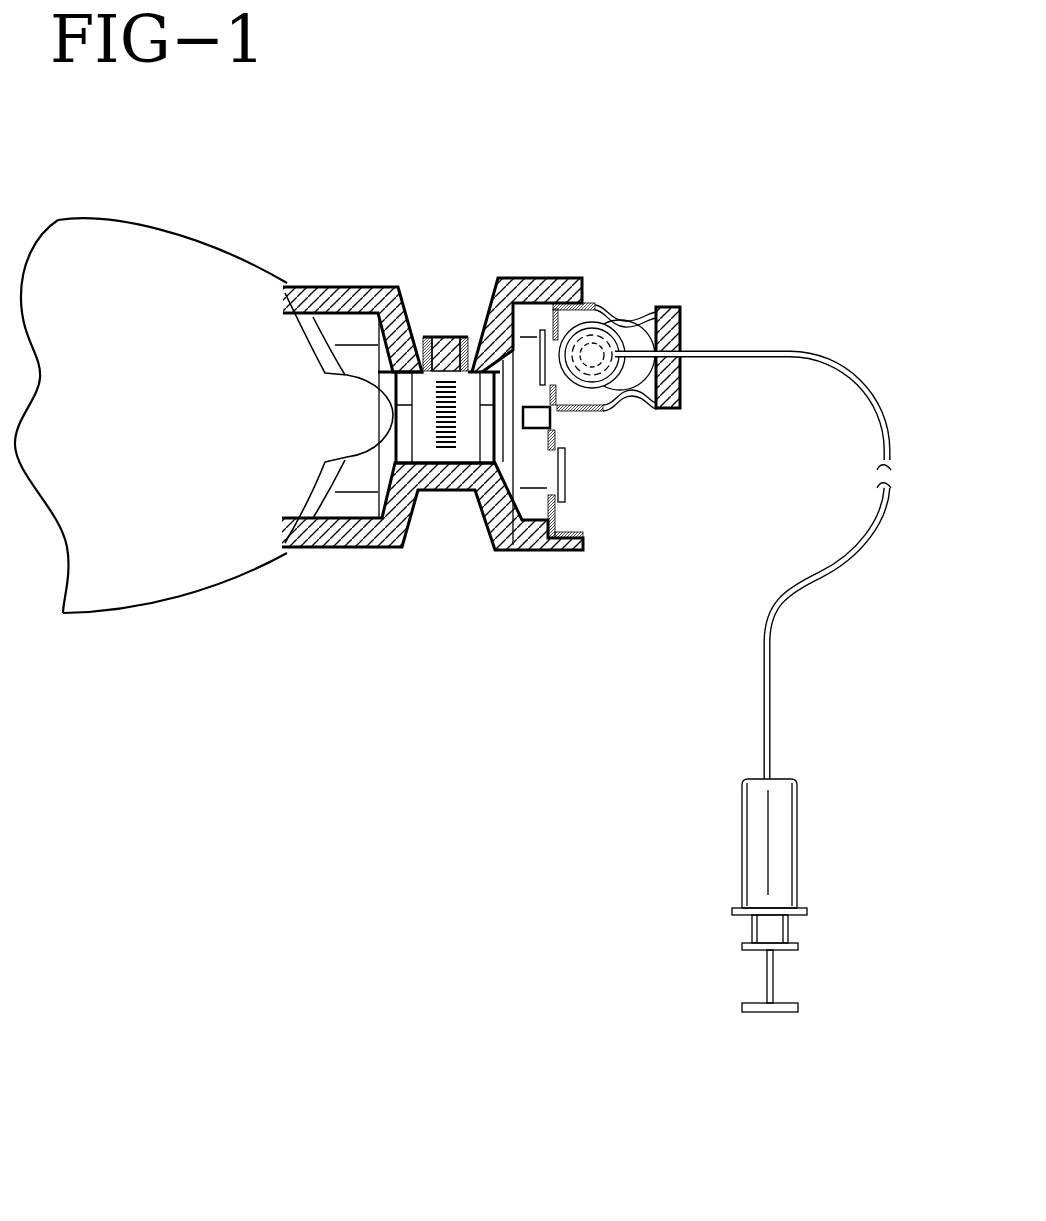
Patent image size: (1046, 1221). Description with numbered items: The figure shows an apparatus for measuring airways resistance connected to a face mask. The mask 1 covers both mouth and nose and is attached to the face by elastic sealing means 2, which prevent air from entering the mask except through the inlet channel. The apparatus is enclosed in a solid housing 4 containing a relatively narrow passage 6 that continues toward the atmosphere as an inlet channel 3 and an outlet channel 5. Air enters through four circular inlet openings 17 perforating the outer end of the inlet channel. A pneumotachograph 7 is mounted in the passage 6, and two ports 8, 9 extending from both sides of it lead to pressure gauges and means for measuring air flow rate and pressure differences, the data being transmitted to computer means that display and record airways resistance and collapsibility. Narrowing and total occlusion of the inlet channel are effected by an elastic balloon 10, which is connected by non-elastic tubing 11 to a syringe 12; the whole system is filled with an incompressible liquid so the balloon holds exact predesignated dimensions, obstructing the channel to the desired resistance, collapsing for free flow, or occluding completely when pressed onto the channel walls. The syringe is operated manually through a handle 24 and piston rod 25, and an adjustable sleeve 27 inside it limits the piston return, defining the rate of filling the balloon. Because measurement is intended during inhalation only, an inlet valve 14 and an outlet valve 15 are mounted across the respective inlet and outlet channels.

The mask 1 is at (350, 285).
The elastic sealing means 2 is at (326, 478).
The inlet channel 3 is at (527, 277).
The solid housing 4 is at (391, 457).
The outlet channel 5 is at (527, 505).
The passage 6 is at (477, 440).
The pneumotachograph 7 is at (447, 452).
The port 8 is at (432, 336).
The port 9 is at (458, 336).
The elastic balloon 10 is at (613, 327).
The non-elastic tubing 11 is at (718, 353).
The syringe 12 is at (743, 805).
The inlet valve 14 is at (570, 277).
The outlet valve 15 is at (565, 483).
The circular inlet openings 17 is at (642, 323).
The handle 24 is at (742, 1007).
The piston rod 25 is at (767, 970).
The sleeve 27 is at (752, 930).